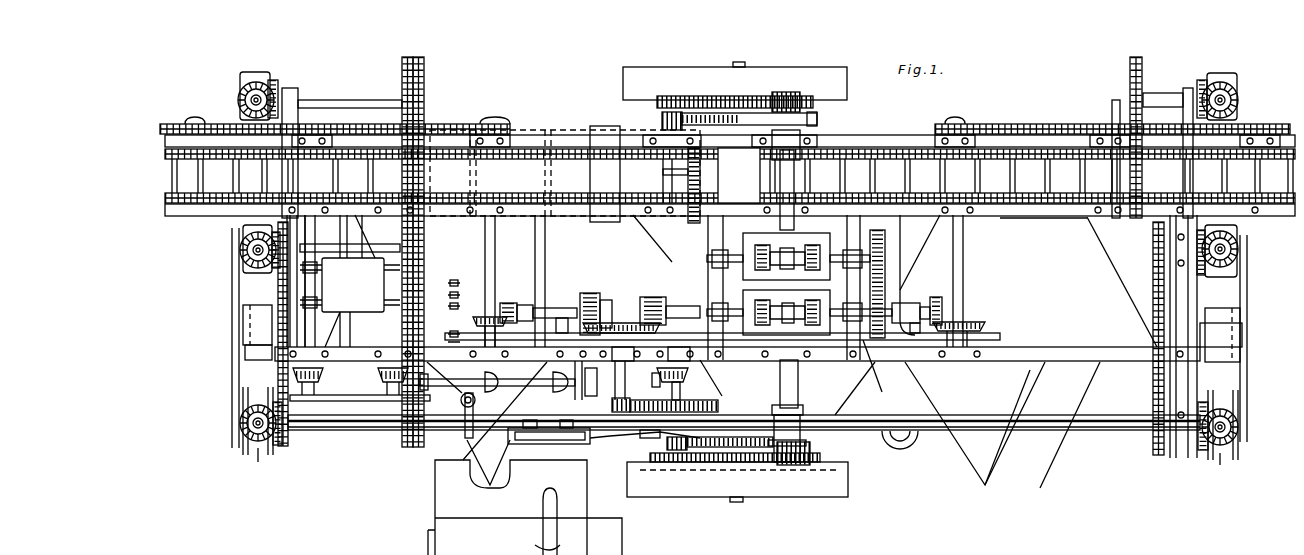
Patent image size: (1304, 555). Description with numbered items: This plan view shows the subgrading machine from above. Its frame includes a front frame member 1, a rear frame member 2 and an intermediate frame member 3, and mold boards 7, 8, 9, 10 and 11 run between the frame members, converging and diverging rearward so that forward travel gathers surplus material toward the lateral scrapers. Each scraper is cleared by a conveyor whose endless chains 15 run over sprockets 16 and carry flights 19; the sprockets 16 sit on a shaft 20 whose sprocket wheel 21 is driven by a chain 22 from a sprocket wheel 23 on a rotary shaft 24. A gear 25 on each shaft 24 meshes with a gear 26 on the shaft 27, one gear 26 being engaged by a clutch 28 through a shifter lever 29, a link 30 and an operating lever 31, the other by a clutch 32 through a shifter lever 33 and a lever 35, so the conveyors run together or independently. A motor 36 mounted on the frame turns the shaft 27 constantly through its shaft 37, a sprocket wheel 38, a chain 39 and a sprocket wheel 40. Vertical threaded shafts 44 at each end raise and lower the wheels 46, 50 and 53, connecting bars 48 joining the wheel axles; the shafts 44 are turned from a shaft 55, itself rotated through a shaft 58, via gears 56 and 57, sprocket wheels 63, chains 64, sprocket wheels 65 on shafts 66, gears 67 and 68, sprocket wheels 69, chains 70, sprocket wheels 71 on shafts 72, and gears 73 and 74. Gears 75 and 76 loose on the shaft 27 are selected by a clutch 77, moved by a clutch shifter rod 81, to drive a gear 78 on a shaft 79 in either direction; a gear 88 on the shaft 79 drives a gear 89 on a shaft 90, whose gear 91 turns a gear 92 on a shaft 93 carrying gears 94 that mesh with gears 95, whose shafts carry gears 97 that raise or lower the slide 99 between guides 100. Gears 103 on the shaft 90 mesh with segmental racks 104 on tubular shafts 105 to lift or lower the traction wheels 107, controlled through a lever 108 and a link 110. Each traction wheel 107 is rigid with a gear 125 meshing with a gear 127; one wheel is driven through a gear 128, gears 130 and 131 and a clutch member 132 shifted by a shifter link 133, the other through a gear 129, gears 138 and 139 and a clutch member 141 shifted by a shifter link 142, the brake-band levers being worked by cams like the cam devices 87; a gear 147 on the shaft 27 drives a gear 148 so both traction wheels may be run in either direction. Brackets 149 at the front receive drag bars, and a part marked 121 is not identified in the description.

The front frame member 1 is at (1094, 432).
The rear frame member 2 is at (868, 138).
The intermediate frame member 3 is at (1040, 356).
The mold boards 7 is at (1052, 220).
The mold boards 8 is at (1052, 462).
The mold boards 9 is at (1012, 452).
The mold boards 10 is at (972, 458).
The mold boards 11 is at (855, 392).
The endless chains 15 is at (350, 160).
The sprockets 16 is at (168, 155).
The flights or plates 19 is at (250, 172).
The shaft 20 is at (195, 176).
The sprocket wheel 21 is at (162, 129).
The chain 22 is at (370, 132).
The sprocket wheel 23 is at (504, 118).
The rotary shaft 24 is at (496, 233).
The gear 25 is at (478, 317).
The gear 26 is at (507, 302).
The shaft 27 is at (963, 248).
The clutch 28 is at (912, 325).
The shifter lever 29 is at (902, 264).
The link 30 is at (870, 356).
The operating lever 31 is at (458, 379).
The clutch 32 is at (525, 304).
The shifter lever 33 is at (546, 230).
The lever 35 is at (470, 318).
The motor or engine 36 is at (538, 130).
The shaft 37 is at (684, 548).
The sprocket wheel 38 is at (702, 168).
The chain 39 is at (688, 230).
The sprocket wheel 40 is at (715, 360).
The vertical threaded shaft 44 is at (238, 100).
The wheels 46 is at (248, 270).
The connecting bars 48 is at (232, 378).
The wheel 50 is at (255, 313).
The wheel 53 is at (258, 78).
The shaft 55 is at (943, 436).
The gears 56 is at (284, 440).
The gears 57 is at (240, 425).
The shaft 58 is at (488, 380).
The sprocket wheel 63 is at (416, 448).
The sprocket chains 64 is at (1156, 356).
The sprocket wheels 65 is at (432, 255).
The shafts 66 is at (320, 252).
The gears 67 is at (275, 270).
The gears 68 is at (240, 240).
The sprocket wheels 69 is at (432, 238).
The chains 70 is at (1132, 165).
The sprocket wheels 71 is at (408, 66).
The shafts 72 is at (352, 104).
The gears 73 is at (278, 86).
The gears 74 is at (251, 82).
The gear 75 is at (568, 325).
The gear 76 is at (688, 336).
The clutch 77 is at (618, 296).
The gear 78 is at (626, 336).
The shaft 79 is at (617, 380).
The clutch shifter rod 81 is at (575, 292).
The cam devices 87 is at (663, 171).
The gear 88 is at (613, 410).
The gear 89 is at (720, 408).
The shaft 90 is at (680, 389).
The gear 91 is at (690, 372).
The gear 92 is at (390, 296).
The shaft 93 is at (522, 385).
The gears 94 is at (306, 384).
The gears 95 is at (380, 380).
The gears 97 is at (320, 270).
The vertically movable slide 99 is at (364, 306).
The guides 100 is at (730, 210).
The gears 103 is at (664, 122).
The segmental racks 104 is at (716, 128).
The tubular shafts 105 is at (778, 178).
The traction wheel 107 is at (848, 76).
The lever 108 is at (558, 495).
The link 110 is at (622, 438).
The lever 121 is at (539, 539).
The gear 125 is at (718, 100).
The gears 127 is at (790, 96).
The gear 128 is at (758, 336).
The gear 129 is at (820, 246).
The gear 130 is at (757, 300).
The gear 131 is at (820, 304).
The clutch member 132 is at (790, 304).
The shifter link 133 is at (612, 300).
The gear 138 is at (752, 246).
The gear 139 is at (882, 277).
The clutch member 141 is at (782, 268).
The shifter link 142 is at (585, 270).
The gear 147 is at (902, 304).
The gear 148 is at (886, 236).
The brackets 149 is at (580, 446).